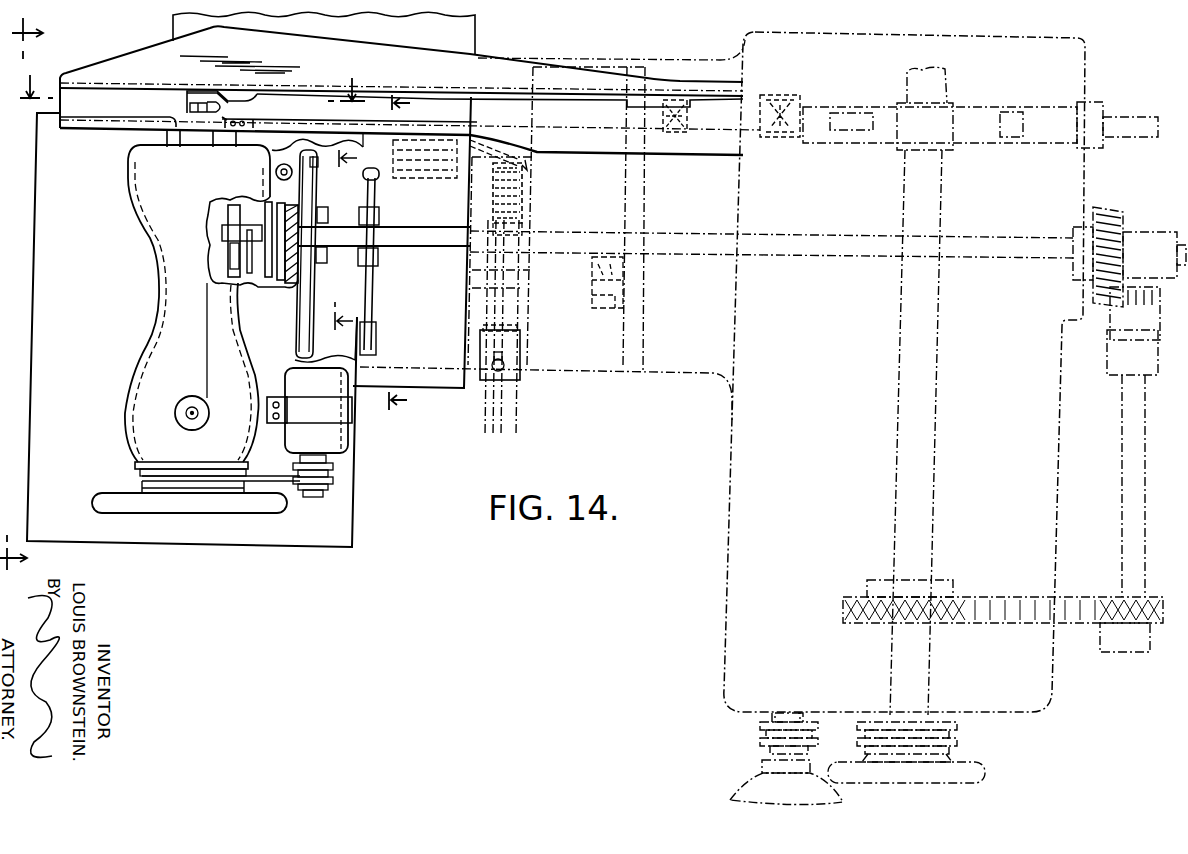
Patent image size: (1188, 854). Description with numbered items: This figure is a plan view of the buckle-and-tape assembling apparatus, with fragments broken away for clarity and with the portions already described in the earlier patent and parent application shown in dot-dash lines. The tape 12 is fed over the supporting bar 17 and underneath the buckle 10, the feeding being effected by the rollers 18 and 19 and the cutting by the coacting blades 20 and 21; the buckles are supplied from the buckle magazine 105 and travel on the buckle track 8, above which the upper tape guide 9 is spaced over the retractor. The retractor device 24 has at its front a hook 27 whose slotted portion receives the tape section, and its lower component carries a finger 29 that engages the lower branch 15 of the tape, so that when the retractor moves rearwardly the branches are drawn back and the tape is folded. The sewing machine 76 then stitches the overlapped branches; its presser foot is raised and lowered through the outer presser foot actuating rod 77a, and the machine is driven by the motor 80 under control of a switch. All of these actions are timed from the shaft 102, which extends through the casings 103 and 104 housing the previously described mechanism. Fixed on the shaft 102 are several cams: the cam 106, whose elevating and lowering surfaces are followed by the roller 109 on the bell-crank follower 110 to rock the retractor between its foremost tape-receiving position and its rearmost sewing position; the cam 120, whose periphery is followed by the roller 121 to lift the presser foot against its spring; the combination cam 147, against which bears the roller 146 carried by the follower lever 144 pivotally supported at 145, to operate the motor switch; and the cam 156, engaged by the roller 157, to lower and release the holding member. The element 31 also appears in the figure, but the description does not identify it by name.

The buckle track 8 is at (107, 128).
The upper tape guide 9 is at (249, 120).
The buckle 10 is at (690, 112).
The tape 12 is at (506, 272).
The lower branch 15 is at (25, 300).
The supporting bar 17 is at (197, 85).
The roller 18 is at (525, 185).
The roller 19 is at (525, 206).
The blade 20 is at (492, 155).
The blade 21 is at (530, 170).
The retractor device 24 is at (201, 142).
The hook 27 is at (187, 103).
The finger 29 is at (405, 258).
The cowling 31 is at (148, 53).
The sewing machine 76 is at (160, 297).
The outer presser foot actuating rod 77a is at (291, 153).
The motor 80 is at (348, 440).
The shaft 102 is at (435, 246).
The casing 103 is at (729, 454).
The casing 104 is at (679, 362).
The buckle magazine 105 is at (802, 100).
The cam 106 is at (232, 268).
The roller 109 is at (227, 246).
The bell-crank follower 110 is at (246, 283).
The cam 120 is at (258, 202).
The roller 121 is at (257, 250).
The follower lever 144 is at (371, 304).
The pivotal support 145 is at (374, 340).
The roller 146 is at (373, 253).
The combination cam 147 is at (373, 219).
The cam 156 is at (321, 256).
The roller 157 is at (322, 227).